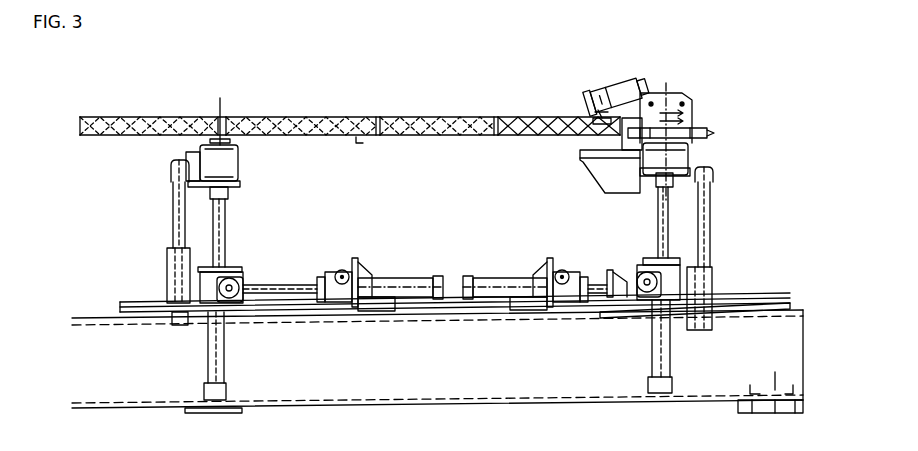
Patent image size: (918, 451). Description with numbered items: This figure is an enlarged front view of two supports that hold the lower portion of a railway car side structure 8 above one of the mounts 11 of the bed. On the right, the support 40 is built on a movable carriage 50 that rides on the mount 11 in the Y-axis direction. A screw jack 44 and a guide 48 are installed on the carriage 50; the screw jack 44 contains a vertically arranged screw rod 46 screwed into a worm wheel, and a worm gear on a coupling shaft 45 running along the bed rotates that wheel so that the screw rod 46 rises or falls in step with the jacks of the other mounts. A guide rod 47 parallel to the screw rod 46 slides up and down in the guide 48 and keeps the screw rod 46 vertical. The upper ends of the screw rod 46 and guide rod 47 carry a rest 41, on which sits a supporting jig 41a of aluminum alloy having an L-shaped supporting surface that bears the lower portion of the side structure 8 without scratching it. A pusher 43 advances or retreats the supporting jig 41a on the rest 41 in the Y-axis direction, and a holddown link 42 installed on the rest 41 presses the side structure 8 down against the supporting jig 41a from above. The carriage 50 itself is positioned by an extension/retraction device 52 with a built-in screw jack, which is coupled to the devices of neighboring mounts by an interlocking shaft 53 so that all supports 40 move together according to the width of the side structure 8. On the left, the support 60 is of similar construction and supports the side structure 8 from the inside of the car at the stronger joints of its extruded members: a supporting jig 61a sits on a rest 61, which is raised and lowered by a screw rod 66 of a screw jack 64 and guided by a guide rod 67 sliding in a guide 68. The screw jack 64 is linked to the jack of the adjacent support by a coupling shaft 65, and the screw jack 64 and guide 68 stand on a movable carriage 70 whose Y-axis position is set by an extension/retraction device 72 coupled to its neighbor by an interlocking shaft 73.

The side structure 8 is at (286, 96).
The mount 11 is at (397, 362).
The support 40 is at (537, 213).
The rest 41 is at (602, 184).
The supporting jig 41a is at (624, 128).
The holddown link 42 is at (603, 76).
The pusher 43 is at (700, 126).
The screw jack 44 is at (645, 266).
The coupling shaft 45 is at (647, 296).
The screw rod 46 is at (658, 210).
The guide rod 47 is at (725, 210).
The guide 48 is at (715, 284).
The movable carriage 50 is at (603, 312).
The extension/retraction device 52 is at (491, 255).
The interlocking shaft 53 is at (560, 267).
The support 60 is at (262, 205).
The rest 61 is at (238, 185).
The supporting jig 61a is at (238, 151).
The screw jack 64 is at (222, 268).
The coupling shaft 65 is at (217, 327).
The screw rod 66 is at (227, 232).
The guide rod 67 is at (171, 215).
The guide 68 is at (170, 269).
The movable carriage 70 is at (253, 312).
The extension/retraction device 72 is at (398, 272).
The interlocking shaft 73 is at (324, 262).